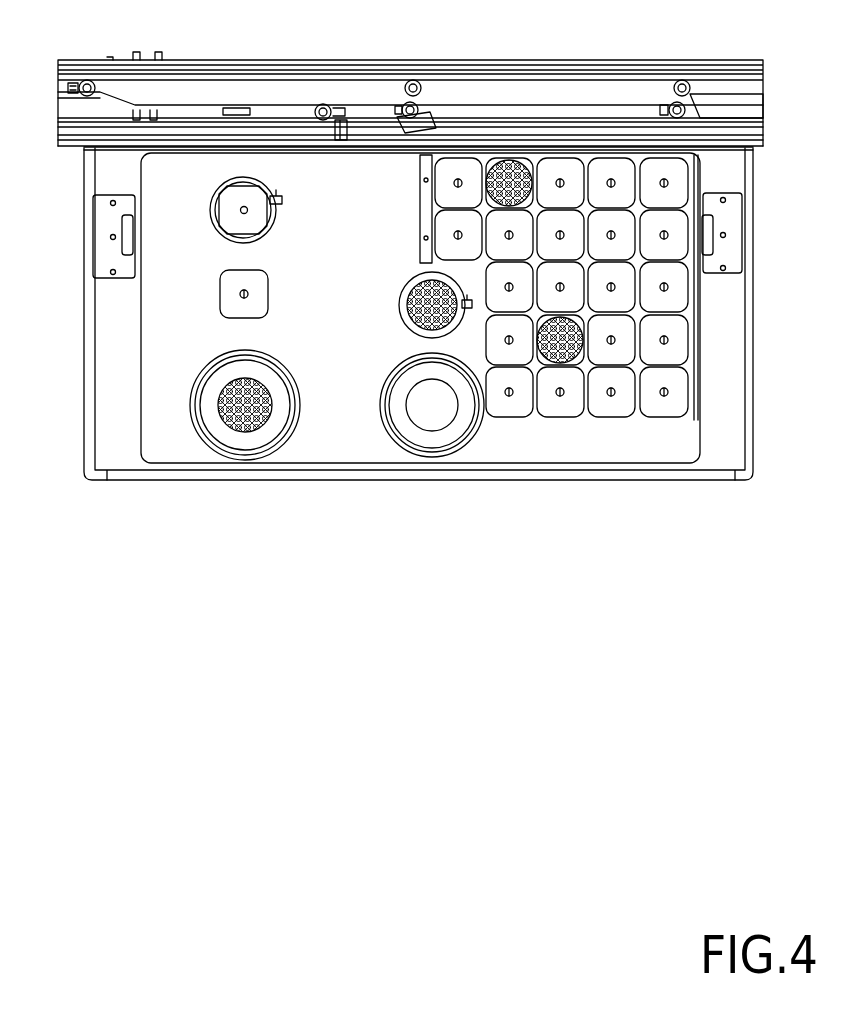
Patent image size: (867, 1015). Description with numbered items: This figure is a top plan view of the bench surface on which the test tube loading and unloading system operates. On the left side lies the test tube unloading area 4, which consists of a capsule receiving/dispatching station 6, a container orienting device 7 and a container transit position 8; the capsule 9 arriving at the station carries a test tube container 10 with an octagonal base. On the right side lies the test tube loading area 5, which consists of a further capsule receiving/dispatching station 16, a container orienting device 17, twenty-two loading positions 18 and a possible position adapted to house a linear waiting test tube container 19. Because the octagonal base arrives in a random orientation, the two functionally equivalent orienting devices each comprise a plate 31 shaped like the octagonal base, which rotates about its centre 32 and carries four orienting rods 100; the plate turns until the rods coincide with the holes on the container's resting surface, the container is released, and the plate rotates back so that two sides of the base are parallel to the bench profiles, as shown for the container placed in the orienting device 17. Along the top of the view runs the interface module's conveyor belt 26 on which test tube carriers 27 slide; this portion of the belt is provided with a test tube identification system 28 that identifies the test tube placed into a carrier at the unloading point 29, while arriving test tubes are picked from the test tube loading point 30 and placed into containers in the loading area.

The test tube unloading area 4 is at (165, 357).
The test tube loading area 5 is at (618, 442).
The capsule receiving/dispatching station 6 is at (192, 412).
The container orienting device 7 is at (210, 225).
The container transit position 8 is at (215, 308).
The capsule 9 is at (257, 440).
The test tube container 10 is at (528, 165).
The capsule receiving/dispatching station 16 is at (450, 460).
The container orienting device 17 is at (395, 322).
The loading positions 18 is at (670, 303).
The linear waiting test tube container 19 is at (427, 217).
The conveyor belt 26 is at (297, 90).
The test tube carriers 27 is at (297, 112).
The test tube identification system 28 is at (400, 122).
The unloading point 29 is at (340, 107).
The test tube loading point 30 is at (677, 105).
The plate 31 is at (250, 230).
The centre 32 is at (247, 212).
The orienting rods 100 is at (262, 198).